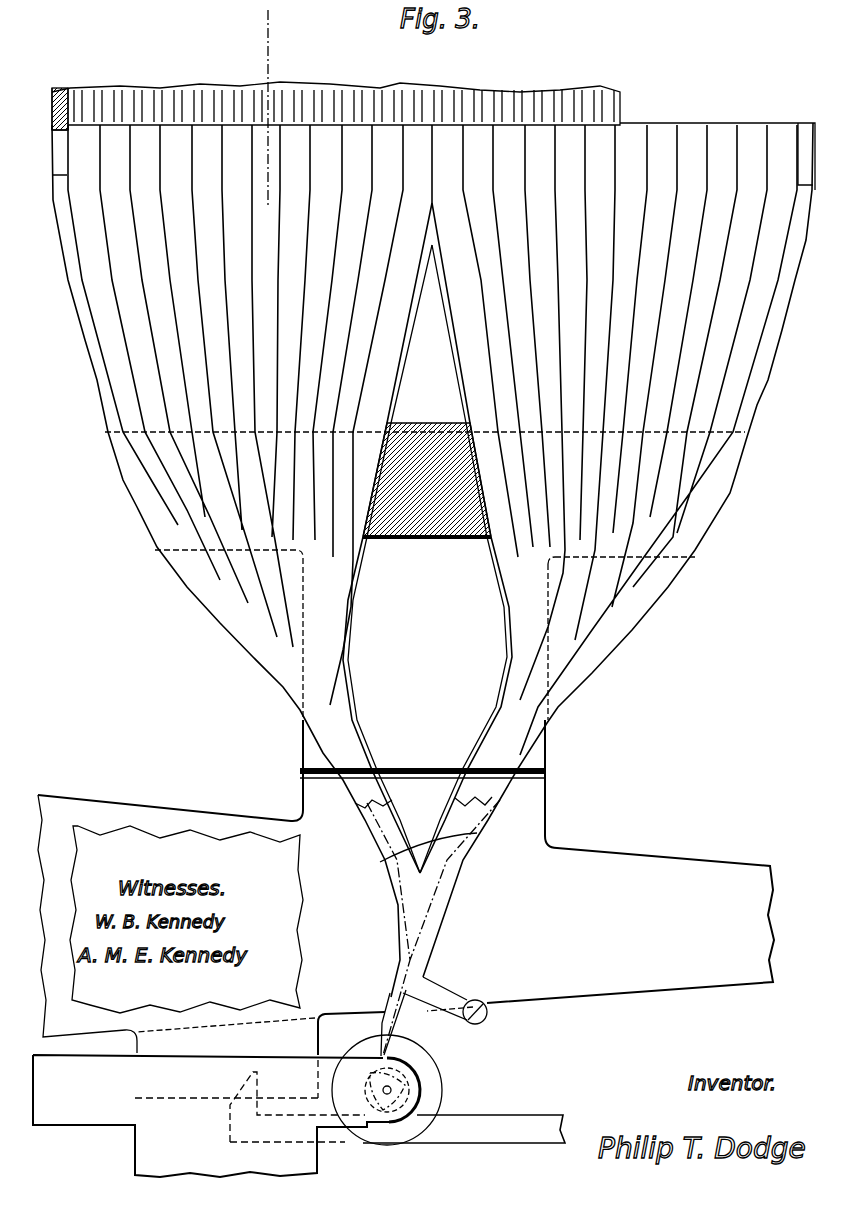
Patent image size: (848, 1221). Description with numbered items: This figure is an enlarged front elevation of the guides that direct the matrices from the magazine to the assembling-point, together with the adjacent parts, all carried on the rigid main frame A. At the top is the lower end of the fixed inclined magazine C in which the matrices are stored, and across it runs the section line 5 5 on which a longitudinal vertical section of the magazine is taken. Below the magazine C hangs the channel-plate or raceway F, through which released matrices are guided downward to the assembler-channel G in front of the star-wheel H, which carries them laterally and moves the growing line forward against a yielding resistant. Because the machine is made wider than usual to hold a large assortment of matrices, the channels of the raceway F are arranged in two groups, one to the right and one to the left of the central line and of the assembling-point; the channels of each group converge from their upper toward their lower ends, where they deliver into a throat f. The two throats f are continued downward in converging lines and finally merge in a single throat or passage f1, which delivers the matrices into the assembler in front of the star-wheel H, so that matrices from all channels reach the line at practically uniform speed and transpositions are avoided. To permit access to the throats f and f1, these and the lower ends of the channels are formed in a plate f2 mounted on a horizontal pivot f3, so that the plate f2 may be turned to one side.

The section line 5 5 is at (280, 199).
The fixed inclined magazine C is at (537, 103).
The channel-plate or raceway F is at (278, 243).
The throat f is at (334, 702).
The single throat or passage f1 is at (407, 960).
The plate f2 is at (422, 897).
The horizontal pivot f3 is at (480, 1002).
The rigid main frame A is at (455, 887).
The assembler-channel G is at (299, 1116).
The star-wheel H is at (398, 1078).